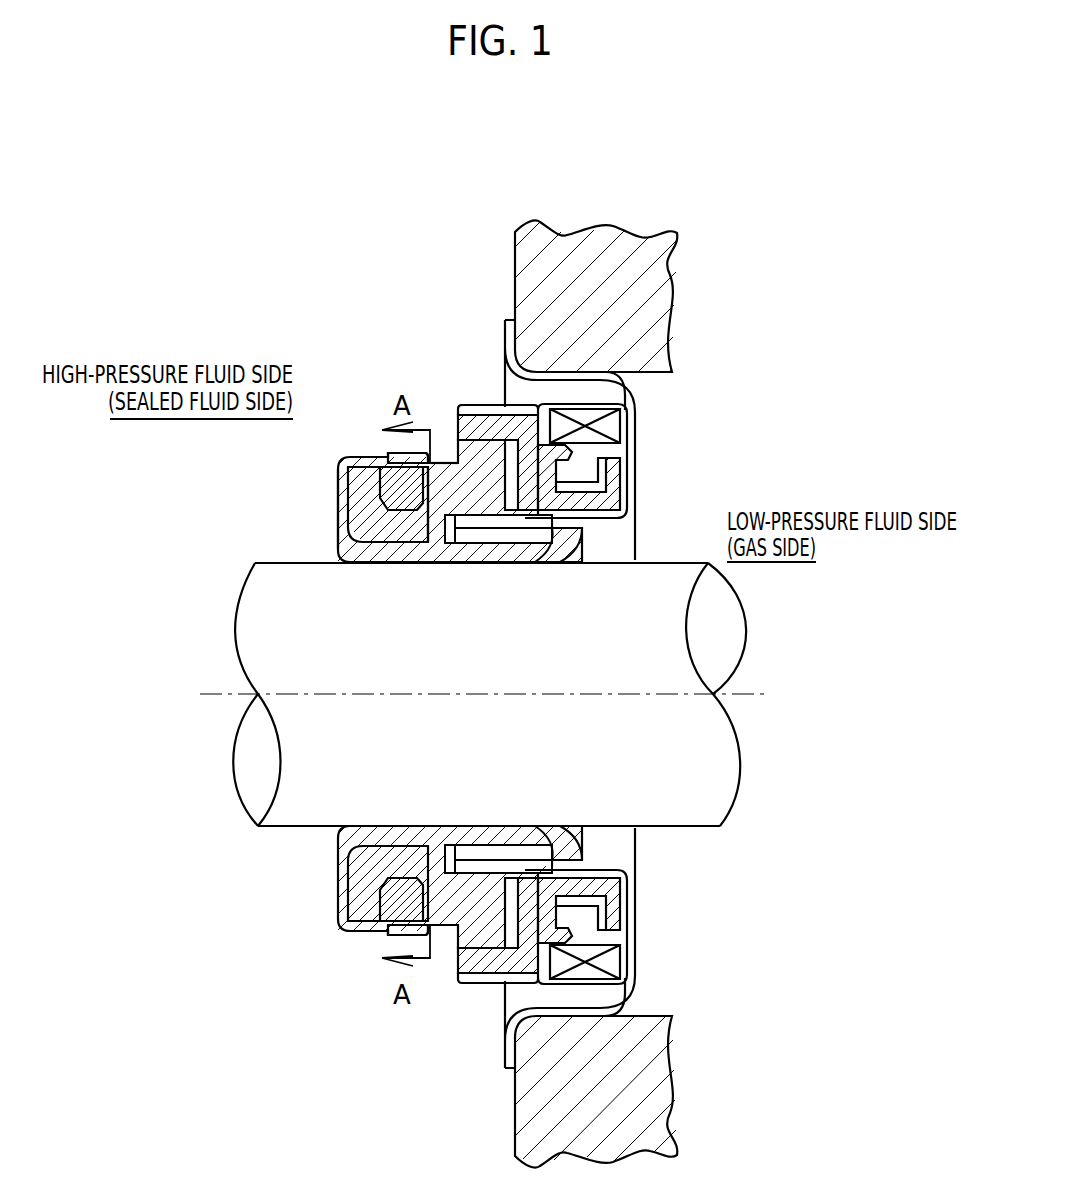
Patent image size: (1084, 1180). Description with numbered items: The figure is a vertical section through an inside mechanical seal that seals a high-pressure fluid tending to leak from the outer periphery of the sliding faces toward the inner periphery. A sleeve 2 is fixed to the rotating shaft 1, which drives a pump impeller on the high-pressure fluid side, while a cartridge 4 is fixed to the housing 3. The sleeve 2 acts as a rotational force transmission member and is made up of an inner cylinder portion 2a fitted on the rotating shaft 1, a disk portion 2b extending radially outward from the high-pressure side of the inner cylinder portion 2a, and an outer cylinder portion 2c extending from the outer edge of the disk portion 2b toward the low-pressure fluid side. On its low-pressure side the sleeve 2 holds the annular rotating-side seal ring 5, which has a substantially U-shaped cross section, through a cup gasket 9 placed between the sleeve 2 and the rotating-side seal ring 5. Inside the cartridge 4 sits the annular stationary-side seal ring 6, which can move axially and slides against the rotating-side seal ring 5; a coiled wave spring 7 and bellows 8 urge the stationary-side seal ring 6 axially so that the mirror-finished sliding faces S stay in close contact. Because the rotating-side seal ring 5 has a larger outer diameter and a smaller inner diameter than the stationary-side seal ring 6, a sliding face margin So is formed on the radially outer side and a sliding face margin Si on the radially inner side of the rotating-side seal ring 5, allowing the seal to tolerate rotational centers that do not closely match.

The rotating shaft 1 is at (390, 662).
The sleeve 2 is at (340, 515).
The inner cylinder portion 2a is at (532, 555).
The disk portion 2b is at (337, 525).
The outer cylinder portion 2c is at (382, 457).
The housing 3 is at (583, 250).
The cartridge 4 is at (640, 477).
The rotating-side seal ring 5 is at (345, 457).
The stationary-side seal ring 6 is at (456, 460).
The coiled wave spring 7 is at (613, 430).
The bellows 8 is at (482, 405).
The cup gasket 9 is at (345, 470).
The sliding face S is at (472, 535).
The sliding face margin (radially inner side) Si is at (425, 522).
The sliding face margin (radially outer side) So is at (440, 458).